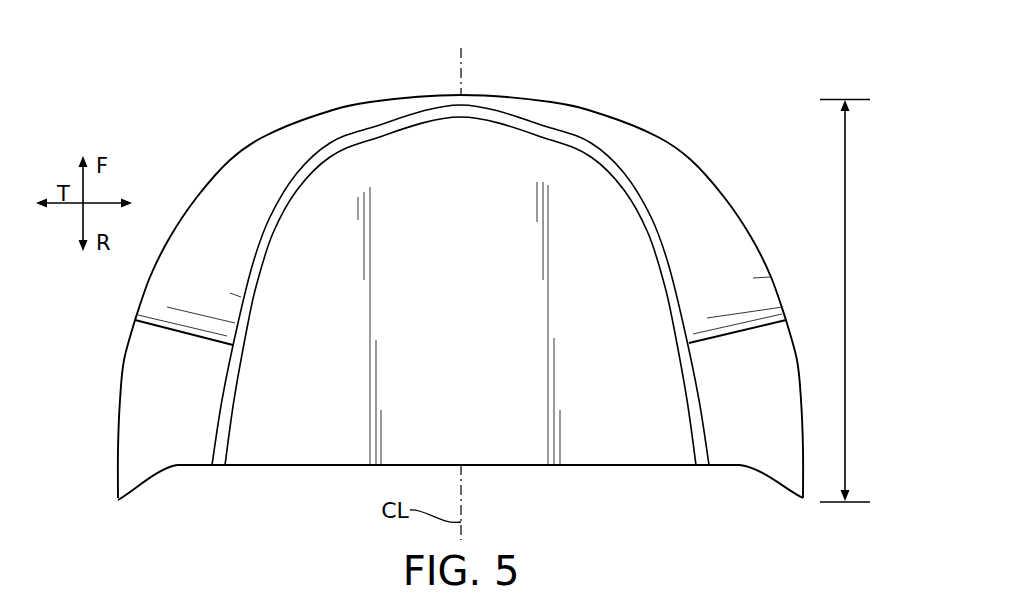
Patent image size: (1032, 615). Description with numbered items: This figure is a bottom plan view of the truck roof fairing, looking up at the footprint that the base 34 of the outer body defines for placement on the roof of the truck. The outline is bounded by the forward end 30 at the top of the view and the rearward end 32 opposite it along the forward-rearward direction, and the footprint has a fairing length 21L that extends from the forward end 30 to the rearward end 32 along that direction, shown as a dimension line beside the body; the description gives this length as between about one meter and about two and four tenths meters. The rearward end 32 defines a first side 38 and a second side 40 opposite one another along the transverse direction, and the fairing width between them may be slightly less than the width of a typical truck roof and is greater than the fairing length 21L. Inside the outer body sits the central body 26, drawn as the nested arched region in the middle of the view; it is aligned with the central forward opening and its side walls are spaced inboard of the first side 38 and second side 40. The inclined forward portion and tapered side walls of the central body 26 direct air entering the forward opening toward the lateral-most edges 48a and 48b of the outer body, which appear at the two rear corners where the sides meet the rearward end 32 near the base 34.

The forward end 30 is at (356, 93).
The central body 26 is at (443, 268).
The base 34 is at (160, 384).
The first side 38 is at (131, 333).
The second side 40 is at (776, 293).
The rearward end 32 is at (302, 488).
The lateral-most edge 48a is at (118, 501).
The lateral-most edge 48b is at (797, 503).
The fairing length 21L is at (847, 302).